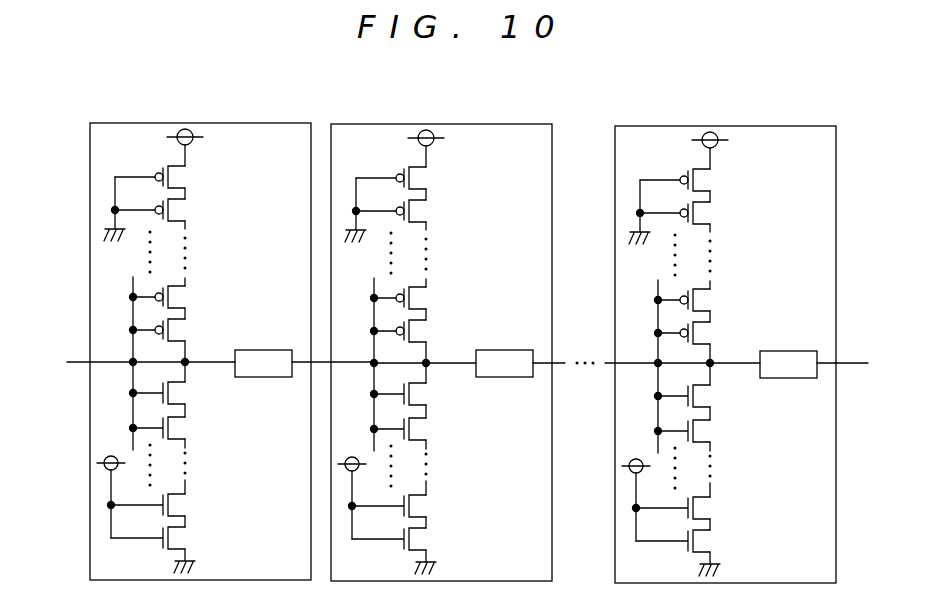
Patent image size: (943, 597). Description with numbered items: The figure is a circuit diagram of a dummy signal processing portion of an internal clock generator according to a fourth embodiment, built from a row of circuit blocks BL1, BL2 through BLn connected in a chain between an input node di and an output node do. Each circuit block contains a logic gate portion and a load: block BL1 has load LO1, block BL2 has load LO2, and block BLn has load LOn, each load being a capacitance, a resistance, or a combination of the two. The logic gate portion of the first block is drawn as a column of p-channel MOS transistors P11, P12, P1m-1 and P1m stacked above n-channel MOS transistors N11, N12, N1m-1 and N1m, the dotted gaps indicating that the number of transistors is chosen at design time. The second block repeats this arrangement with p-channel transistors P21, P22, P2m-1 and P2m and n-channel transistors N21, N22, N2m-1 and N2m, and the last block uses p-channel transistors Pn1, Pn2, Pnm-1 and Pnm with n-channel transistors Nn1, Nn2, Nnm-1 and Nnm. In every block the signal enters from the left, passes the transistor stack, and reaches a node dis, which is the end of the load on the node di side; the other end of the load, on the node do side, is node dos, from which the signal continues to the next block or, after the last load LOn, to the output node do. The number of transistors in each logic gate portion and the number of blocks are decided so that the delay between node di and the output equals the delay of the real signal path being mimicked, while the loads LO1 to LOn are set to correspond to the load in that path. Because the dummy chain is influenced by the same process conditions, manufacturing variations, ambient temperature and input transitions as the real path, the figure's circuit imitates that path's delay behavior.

The circuit block BL1 is at (223, 123).
The circuit block BL2 is at (464, 124).
The circuit block BLn is at (748, 126).
The p-channel MOS transistor P11 is at (188, 181).
The p-channel MOS transistor P12 is at (188, 214).
The p-channel MOS transistor P1m-1 is at (187, 294).
The p-channel MOS transistor P1m is at (187, 328).
The n-channel MOS transistor N11 is at (186, 388).
The n-channel MOS transistor N12 is at (184, 431).
The n-channel MOS transistor N1m-1 is at (184, 507).
The n-channel MOS transistor N1m is at (184, 541).
The p-channel MOS transistor P21 is at (429, 182).
The p-channel MOS transistor P22 is at (429, 215).
The p-channel MOS transistor P2m-1 is at (428, 295).
The p-channel MOS transistor P2m is at (428, 329).
The n-channel MOS transistor N21 is at (427, 389).
The n-channel MOS transistor N22 is at (425, 432).
The n-channel MOS transistor N2m-1 is at (425, 508).
The n-channel MOS transistor N2m is at (425, 542).
The p-channel MOS transistor Pn1 is at (713, 184).
The p-channel MOS transistor Pn2 is at (713, 217).
The p-channel MOS transistor Pnm-1 is at (712, 297).
The p-channel MOS transistor Pnm is at (712, 331).
The n-channel MOS transistor Nn1 is at (711, 391).
The n-channel MOS transistor Nn2 is at (709, 434).
The n-channel MOS transistor Nnm-1 is at (709, 510).
The n-channel MOS transistor Nnm is at (709, 544).
The load LO1 is at (263, 350).
The load LO2 is at (504, 350).
The load LOn is at (788, 351).
The node di is at (77, 359).
The node do is at (863, 338).
The node dis is at (212, 360).
The node dos is at (302, 370).